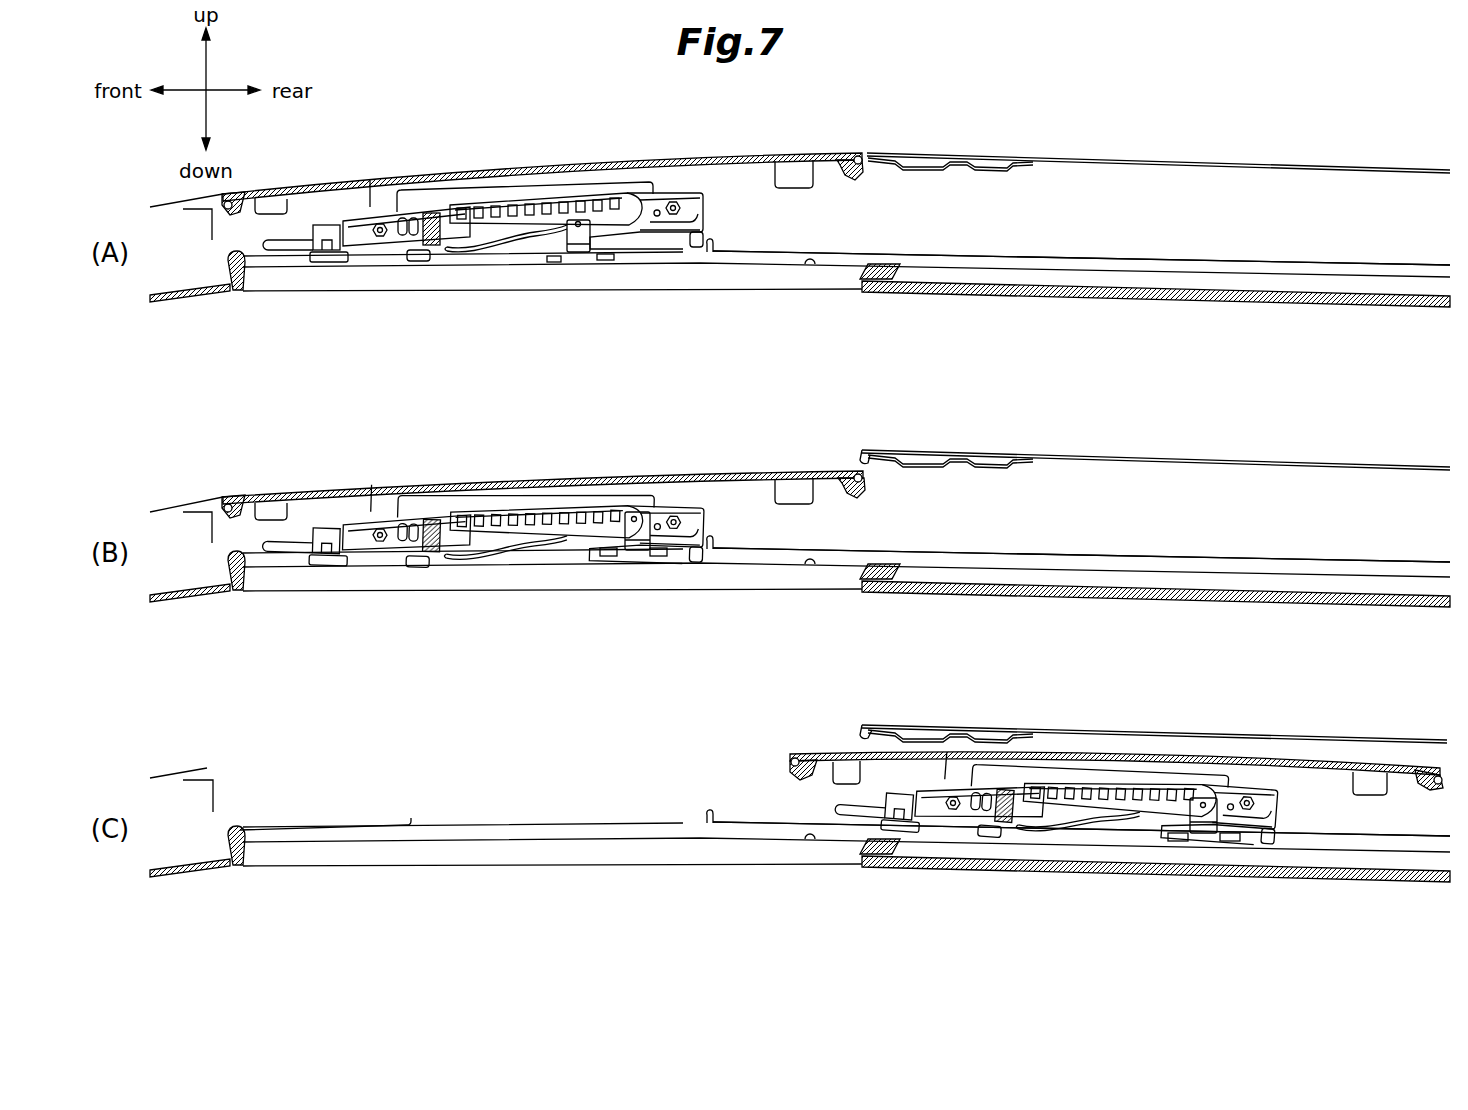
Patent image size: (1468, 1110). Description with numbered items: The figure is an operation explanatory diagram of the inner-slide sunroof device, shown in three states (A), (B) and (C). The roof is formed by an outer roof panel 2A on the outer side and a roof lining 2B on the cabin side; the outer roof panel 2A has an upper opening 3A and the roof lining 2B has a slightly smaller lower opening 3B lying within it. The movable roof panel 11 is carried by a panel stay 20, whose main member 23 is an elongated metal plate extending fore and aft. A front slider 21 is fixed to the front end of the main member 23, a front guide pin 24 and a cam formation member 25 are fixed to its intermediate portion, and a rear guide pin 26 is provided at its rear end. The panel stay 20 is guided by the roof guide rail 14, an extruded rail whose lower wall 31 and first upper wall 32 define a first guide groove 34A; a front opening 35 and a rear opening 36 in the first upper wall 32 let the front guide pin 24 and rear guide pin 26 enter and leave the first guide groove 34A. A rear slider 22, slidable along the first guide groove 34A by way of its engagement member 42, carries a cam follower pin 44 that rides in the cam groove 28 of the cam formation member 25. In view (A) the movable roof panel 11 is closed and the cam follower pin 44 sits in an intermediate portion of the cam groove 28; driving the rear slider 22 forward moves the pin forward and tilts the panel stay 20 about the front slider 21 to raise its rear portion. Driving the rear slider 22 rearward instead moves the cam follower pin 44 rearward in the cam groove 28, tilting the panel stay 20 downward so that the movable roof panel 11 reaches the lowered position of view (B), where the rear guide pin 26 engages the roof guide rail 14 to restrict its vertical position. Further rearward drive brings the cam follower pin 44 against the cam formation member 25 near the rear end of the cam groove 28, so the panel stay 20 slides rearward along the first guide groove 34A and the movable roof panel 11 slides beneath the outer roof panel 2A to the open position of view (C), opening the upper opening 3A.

The outer roof panel 2A is at (953, 156).
The roof lining 2B is at (990, 291).
The upper opening 3A is at (860, 154).
The lower opening 3B is at (862, 279).
The movable roof panel 11 is at (715, 156).
The roof guide rail 14 is at (842, 251).
The panel stay 20 is at (535, 184).
The front slider 21 is at (329, 224).
The rear slider 22 is at (575, 266).
The main member 23 is at (431, 212).
The front guide pin 24 is at (417, 262).
The cam formation member 25 is at (601, 195).
The rear guide pin 26 is at (687, 248).
The cam groove 28 is at (500, 251).
The lower wall 31 is at (763, 268).
The first upper wall 32 is at (741, 251).
The first guide groove 34A is at (814, 263).
The front opening 35 is at (408, 824).
The rear opening 36 is at (712, 238).
The engagement member 42 is at (592, 260).
The cam follower pin 44 is at (576, 226).